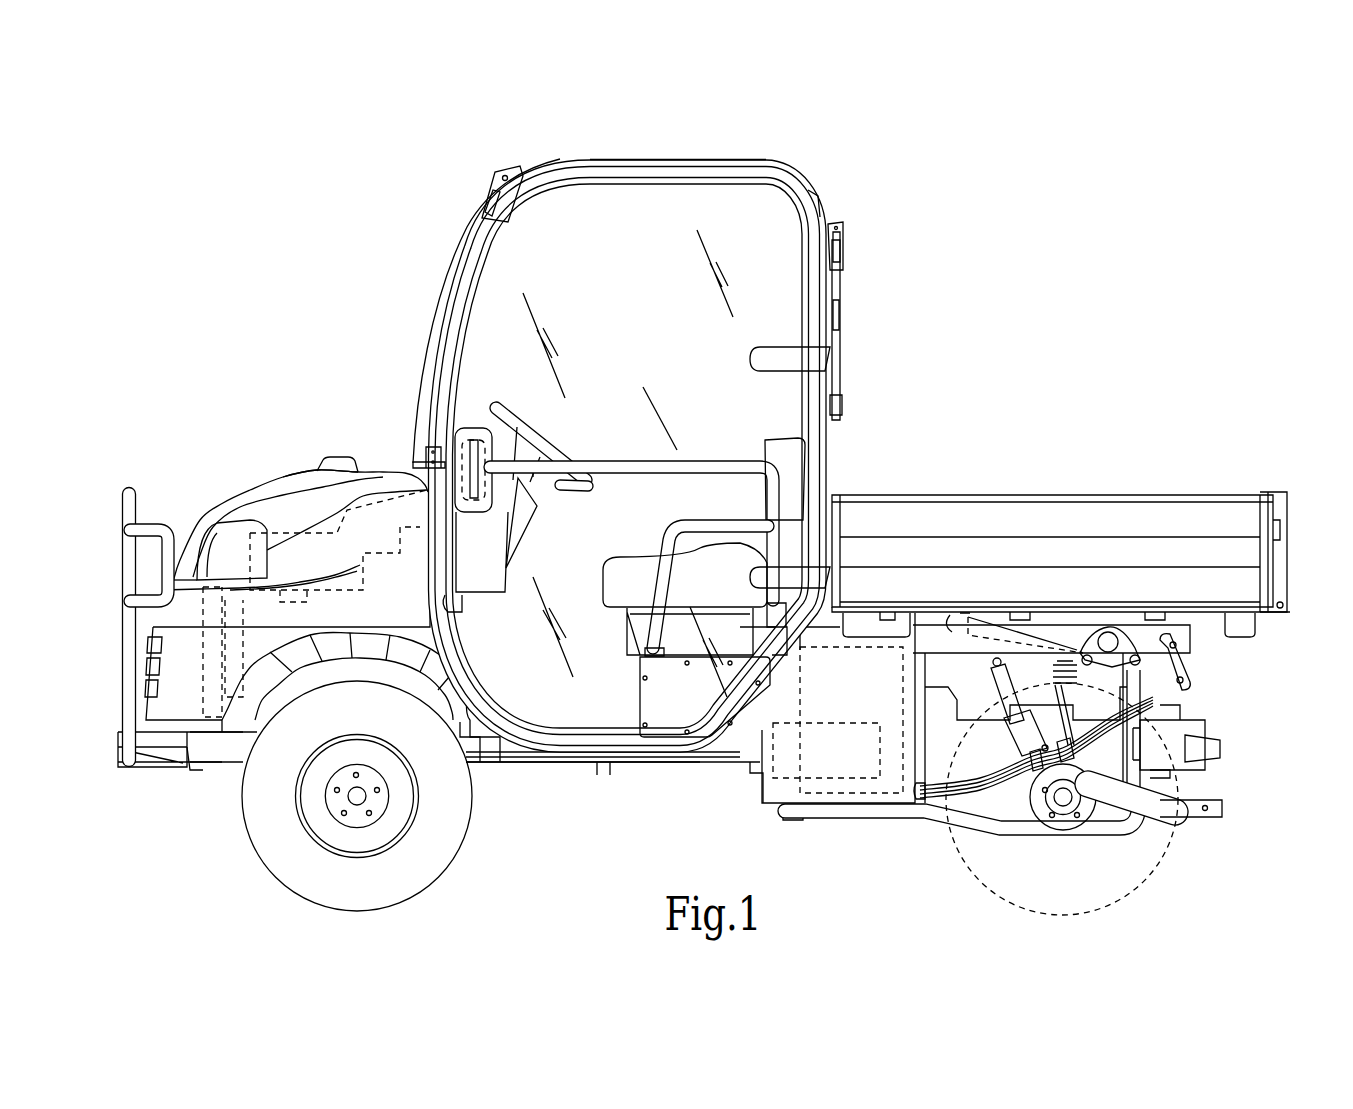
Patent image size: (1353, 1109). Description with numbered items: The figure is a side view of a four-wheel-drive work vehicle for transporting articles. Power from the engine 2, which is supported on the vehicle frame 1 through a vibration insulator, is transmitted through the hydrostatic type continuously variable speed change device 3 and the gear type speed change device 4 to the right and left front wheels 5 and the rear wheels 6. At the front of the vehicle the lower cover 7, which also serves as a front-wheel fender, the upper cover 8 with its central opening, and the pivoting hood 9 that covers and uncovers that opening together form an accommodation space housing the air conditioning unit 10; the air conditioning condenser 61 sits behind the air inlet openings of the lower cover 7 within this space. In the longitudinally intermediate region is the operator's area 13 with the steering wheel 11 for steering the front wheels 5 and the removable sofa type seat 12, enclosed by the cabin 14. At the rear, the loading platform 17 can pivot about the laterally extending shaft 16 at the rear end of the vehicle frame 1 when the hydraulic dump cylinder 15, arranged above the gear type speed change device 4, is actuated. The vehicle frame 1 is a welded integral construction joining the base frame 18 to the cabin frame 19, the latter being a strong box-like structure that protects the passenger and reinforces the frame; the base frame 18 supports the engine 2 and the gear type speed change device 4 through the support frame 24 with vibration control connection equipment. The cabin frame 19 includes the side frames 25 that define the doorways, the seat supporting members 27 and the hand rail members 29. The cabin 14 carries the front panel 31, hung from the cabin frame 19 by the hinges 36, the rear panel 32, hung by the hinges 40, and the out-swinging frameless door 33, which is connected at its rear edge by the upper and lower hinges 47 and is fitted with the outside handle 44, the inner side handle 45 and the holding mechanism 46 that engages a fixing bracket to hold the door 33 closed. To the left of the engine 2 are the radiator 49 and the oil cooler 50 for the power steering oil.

The vehicle frame 1 is at (476, 800).
The engine 2 is at (920, 672).
The hydrostatic type continuously variable speed change device 3 is at (1218, 748).
The gear type speed change device 4 is at (990, 805).
The front wheels 5 is at (253, 833).
The rear wheels 6 is at (1170, 840).
The lower cover 7 is at (175, 715).
The upper cover 8 is at (330, 503).
The hood 9 is at (207, 518).
The air conditioning unit 10 is at (283, 533).
The steering wheel 11 is at (540, 450).
The sofa type seat 12 is at (625, 568).
The operator's area 13 is at (615, 362).
The cabin 14 is at (816, 165).
The hydraulic dump cylinder 15 is at (985, 618).
The laterally extending shaft 16 is at (1190, 650).
The loading platform 17 is at (1040, 497).
The base frame 18 is at (523, 767).
The cabin frame 19 is at (630, 800).
The support frame 24 is at (1033, 825).
The side frames 25 is at (680, 159).
The seat supporting members 27 is at (638, 700).
The hand rail members 29 is at (680, 527).
The front panel 31 is at (437, 340).
The rear panel 32 is at (840, 315).
The door 33 is at (597, 195).
The hinges 36 is at (486, 188).
The hinges 40 is at (840, 240).
The outside handle 44 is at (478, 435).
The inner side handle 45 is at (690, 465).
The holding mechanism 46 is at (490, 505).
The hinges 47 is at (750, 357).
The radiator 49 is at (870, 812).
The oil cooler 50 is at (788, 803).
The air conditioning condenser 61 is at (207, 720).